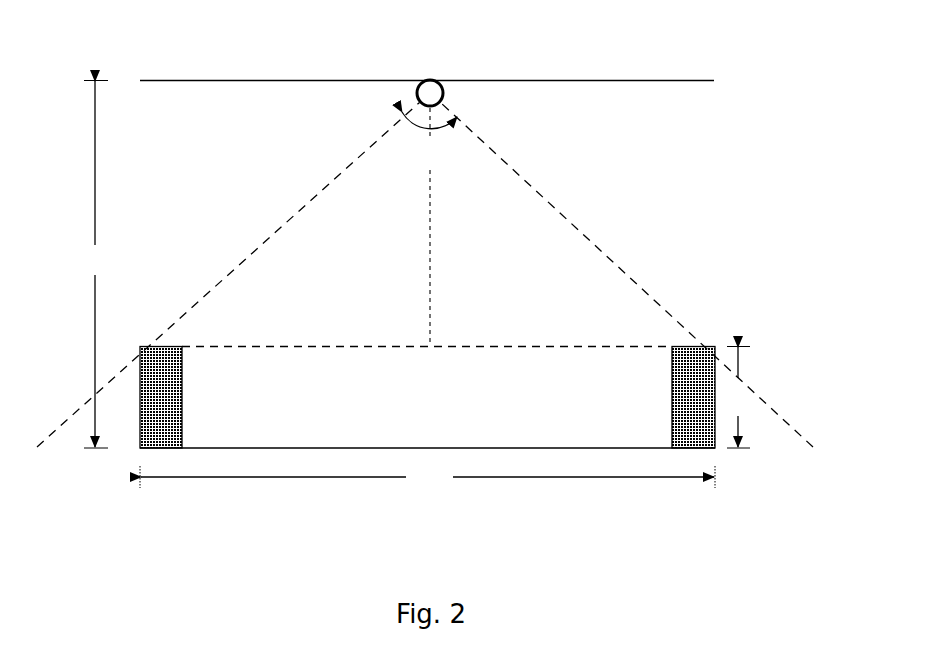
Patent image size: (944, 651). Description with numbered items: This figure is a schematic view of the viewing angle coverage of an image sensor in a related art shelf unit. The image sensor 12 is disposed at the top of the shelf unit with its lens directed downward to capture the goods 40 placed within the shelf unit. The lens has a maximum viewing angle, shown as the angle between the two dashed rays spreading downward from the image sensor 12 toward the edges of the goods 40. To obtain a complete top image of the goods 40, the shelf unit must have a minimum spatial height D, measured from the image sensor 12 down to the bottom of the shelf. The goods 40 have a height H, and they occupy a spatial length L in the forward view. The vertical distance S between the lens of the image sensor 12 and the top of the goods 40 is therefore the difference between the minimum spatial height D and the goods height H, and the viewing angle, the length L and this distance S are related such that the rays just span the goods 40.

The image sensor 12 is at (428, 96).
The goods 40 is at (163, 417).
The minimum spatial height of the shelf unit D is at (97, 265).
The vertical distance between the lens and the goods S is at (446, 227).
The spatial length occupied by the goods L is at (427, 477).
The height of the goods H is at (738, 398).